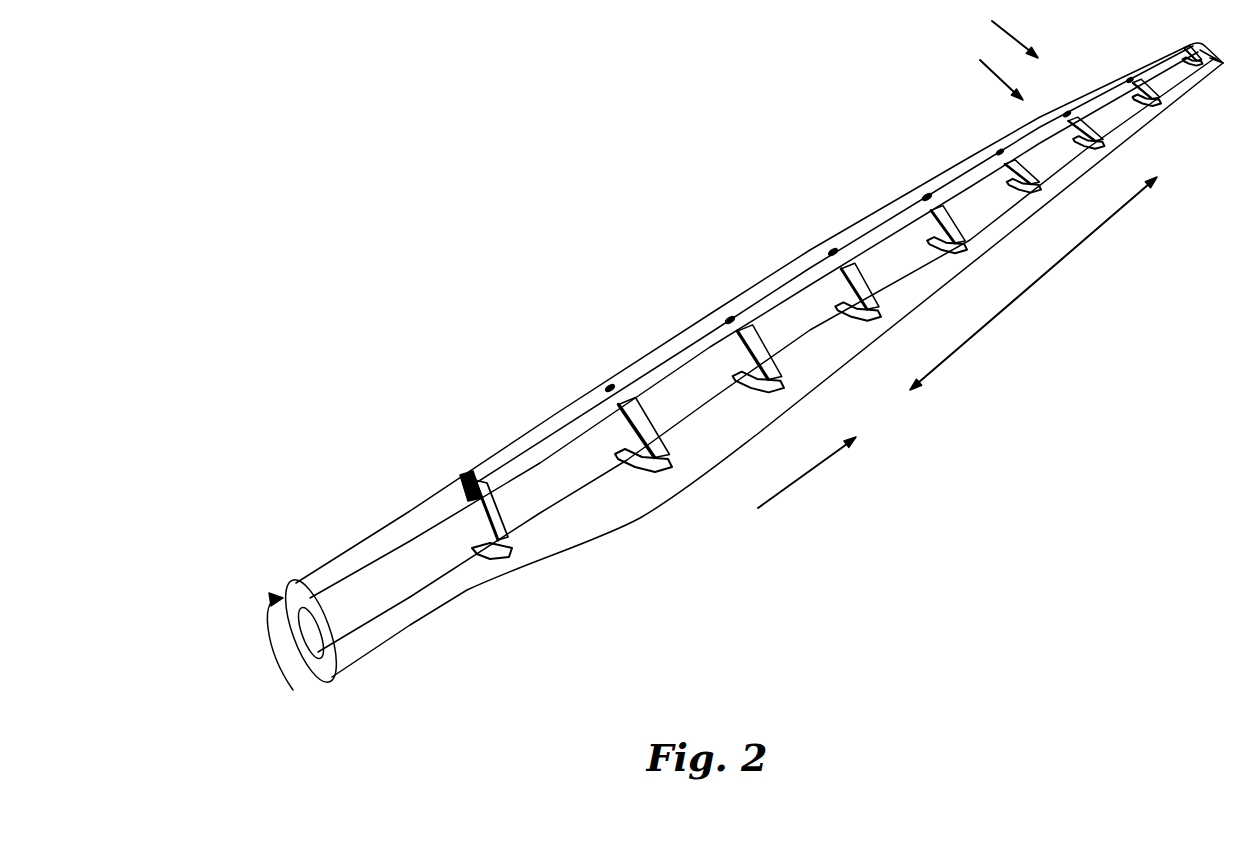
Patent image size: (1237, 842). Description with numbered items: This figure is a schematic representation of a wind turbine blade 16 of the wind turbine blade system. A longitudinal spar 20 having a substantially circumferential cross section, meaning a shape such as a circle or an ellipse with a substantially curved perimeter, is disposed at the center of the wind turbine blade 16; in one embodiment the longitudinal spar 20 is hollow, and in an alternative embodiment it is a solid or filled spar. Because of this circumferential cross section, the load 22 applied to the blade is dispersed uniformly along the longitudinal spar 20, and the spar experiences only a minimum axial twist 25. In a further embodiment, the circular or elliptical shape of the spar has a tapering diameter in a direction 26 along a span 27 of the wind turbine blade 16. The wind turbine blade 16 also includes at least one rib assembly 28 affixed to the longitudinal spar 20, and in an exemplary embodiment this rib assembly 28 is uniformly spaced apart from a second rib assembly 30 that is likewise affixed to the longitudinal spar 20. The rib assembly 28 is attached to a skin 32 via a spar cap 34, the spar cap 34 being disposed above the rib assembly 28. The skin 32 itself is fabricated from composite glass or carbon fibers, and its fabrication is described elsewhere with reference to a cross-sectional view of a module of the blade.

The wind turbine blade 16 is at (475, 93).
The longitudinal spar 20 is at (413, 567).
The load 22 is at (985, 72).
The axial twist 25 is at (267, 630).
The direction 26 is at (812, 470).
The span 27 is at (1020, 295).
The rib assembly 28 is at (505, 518).
The second rib assembly 30 is at (647, 416).
The skin 32 is at (637, 500).
The spar cap 34 is at (567, 433).